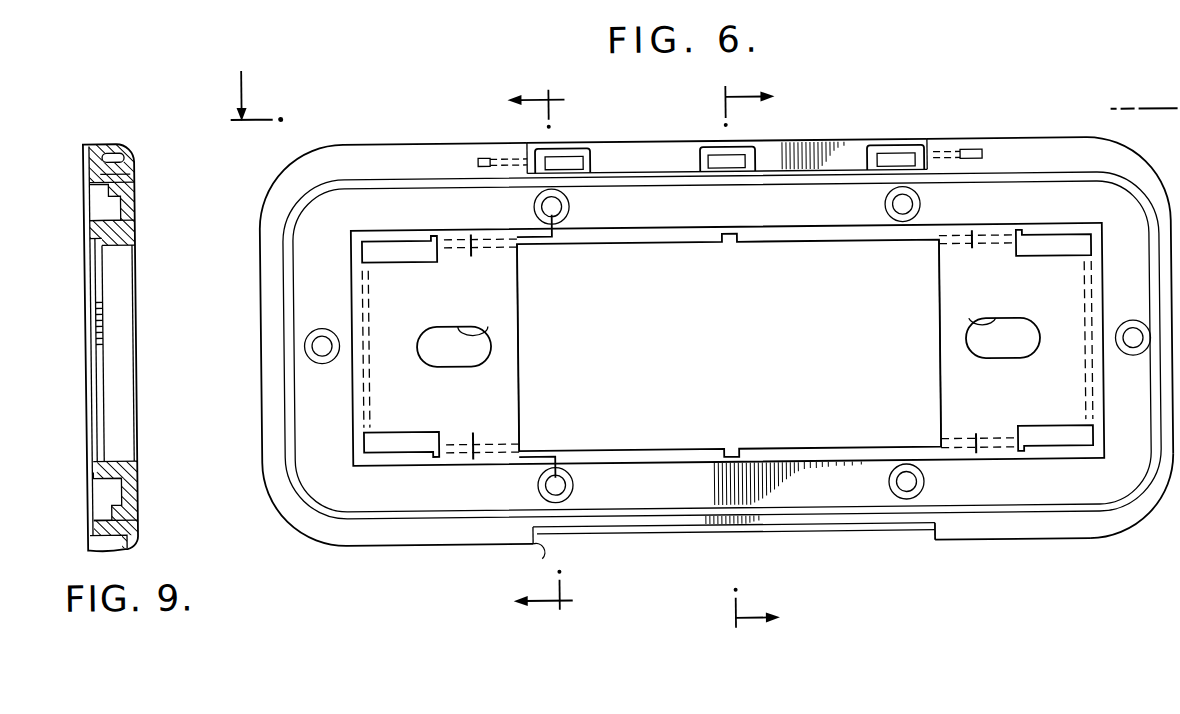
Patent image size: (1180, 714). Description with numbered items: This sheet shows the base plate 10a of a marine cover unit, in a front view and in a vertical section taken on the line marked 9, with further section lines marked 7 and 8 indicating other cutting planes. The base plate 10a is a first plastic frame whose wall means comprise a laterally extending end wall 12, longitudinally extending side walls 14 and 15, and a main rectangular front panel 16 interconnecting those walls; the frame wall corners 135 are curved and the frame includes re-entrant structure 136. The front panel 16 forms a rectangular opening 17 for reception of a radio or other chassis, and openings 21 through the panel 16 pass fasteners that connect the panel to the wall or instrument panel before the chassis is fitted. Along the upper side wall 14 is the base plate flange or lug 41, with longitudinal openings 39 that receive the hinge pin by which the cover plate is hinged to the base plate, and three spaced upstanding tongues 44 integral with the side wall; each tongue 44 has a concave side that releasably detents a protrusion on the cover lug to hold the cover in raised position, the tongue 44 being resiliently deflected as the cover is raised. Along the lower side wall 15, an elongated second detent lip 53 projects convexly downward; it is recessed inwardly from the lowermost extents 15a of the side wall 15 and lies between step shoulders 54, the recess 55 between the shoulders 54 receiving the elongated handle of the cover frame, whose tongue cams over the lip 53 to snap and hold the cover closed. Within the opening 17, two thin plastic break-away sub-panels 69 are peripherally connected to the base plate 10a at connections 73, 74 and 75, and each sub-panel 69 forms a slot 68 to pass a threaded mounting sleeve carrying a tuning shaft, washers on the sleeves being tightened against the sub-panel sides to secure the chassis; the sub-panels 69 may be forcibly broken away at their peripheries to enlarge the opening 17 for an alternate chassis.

In FIG. 9, the base plate 10a is at (119, 120).
In FIG. 6, the base plate 10a is at (392, 566).
In FIG. 6, the first laterally extending end wall 12 is at (265, 287).
In FIG. 6, the first longitudinally extending side wall 14 is at (1017, 142).
In FIG. 6, the lower side wall 15 is at (1028, 529).
In FIG. 6, the side wall lowermost extents 15a is at (960, 542).
In FIG. 6, the main rectangular front panel 16 is at (767, 208).
In FIG. 6, the rectangular opening 17 is at (729, 345).
In FIG. 6, the openings 21 is at (922, 207).
In FIG. 6, the longitudinal openings 39 is at (483, 153).
In FIG. 6, the base plate flange or lug 41 is at (638, 147).
In FIG. 6, the upstanding tongue 44 is at (567, 157).
In FIG. 6, the second detent lip 53 is at (817, 534).
In FIG. 6, the step shoulders 54 is at (540, 549).
In FIG. 6, the recess 55 is at (643, 528).
In FIG. 6, the slot 68 is at (490, 332).
In FIG. 9, the break-away sub-panel 69 is at (104, 320).
In FIG. 6, the break-away sub-panel 69 is at (512, 368).
In FIG. 6, the peripheral connection 73 is at (453, 245).
In FIG. 6, the peripheral connection 74 is at (364, 289).
In FIG. 6, the peripheral connection 75 is at (458, 437).
In FIG. 6, the frame wall corners 135 is at (313, 169).
In FIG. 9, the frame re-entrant structure 136 is at (116, 478).
In FIG. 6, the frame re-entrant structure 136 is at (537, 351).
In FIG. 6, the section line 7- 7 is at (704, 87).
In FIG. 6, the section line 8- 8 is at (533, 361).
In FIG. 6, the section line 9- 9 is at (761, 358).